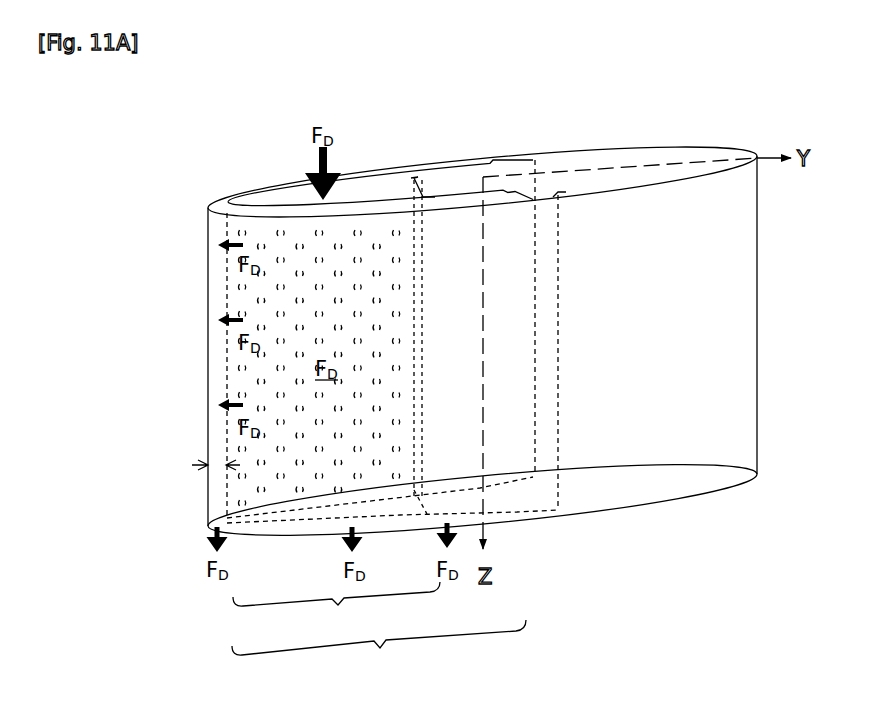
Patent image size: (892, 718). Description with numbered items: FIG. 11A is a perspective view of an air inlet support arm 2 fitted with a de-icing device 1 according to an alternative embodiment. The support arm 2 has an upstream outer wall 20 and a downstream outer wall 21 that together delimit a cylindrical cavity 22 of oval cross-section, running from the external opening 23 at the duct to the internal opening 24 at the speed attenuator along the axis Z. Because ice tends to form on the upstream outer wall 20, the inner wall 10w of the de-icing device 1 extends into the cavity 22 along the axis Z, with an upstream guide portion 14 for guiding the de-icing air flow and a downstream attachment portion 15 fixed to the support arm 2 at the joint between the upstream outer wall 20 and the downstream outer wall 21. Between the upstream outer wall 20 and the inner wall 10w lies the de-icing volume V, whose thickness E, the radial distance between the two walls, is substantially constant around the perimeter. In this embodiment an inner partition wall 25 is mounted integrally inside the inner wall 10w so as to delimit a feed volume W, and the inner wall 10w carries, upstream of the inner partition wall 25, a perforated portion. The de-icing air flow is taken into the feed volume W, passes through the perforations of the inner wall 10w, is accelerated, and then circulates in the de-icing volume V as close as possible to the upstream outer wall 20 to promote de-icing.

The de-icing device 1 is at (266, 140).
The support arm 2 is at (128, 152).
The inner wall 10w is at (227, 363).
The guide portion 14 is at (379, 654).
The attachment portion 15 is at (545, 512).
The upstream outer wall 20 is at (207, 243).
The downstream outer wall 21 is at (758, 316).
The cavity 22 is at (660, 334).
The external opening 23 is at (384, 166).
The internal opening 24 is at (266, 532).
The inner partition wall 25 is at (425, 362).
The thickness E is at (206, 469).
The feed volume W is at (336, 300).
The de-icing volume V is at (210, 389).